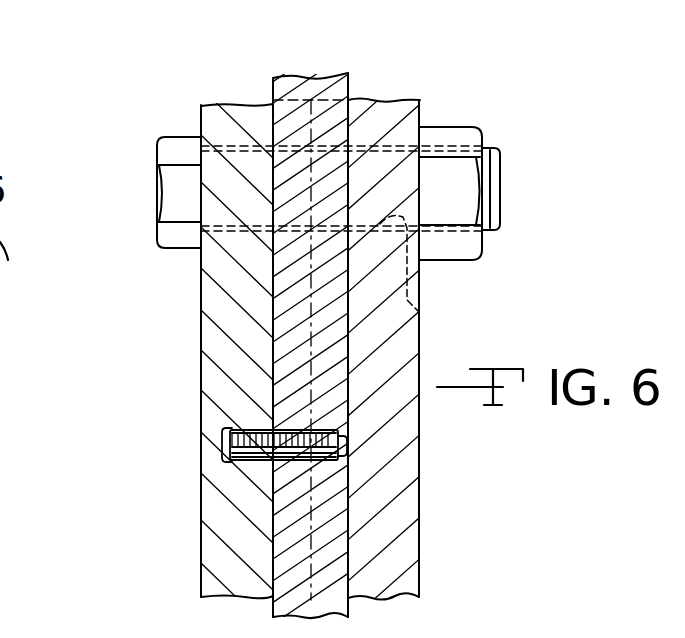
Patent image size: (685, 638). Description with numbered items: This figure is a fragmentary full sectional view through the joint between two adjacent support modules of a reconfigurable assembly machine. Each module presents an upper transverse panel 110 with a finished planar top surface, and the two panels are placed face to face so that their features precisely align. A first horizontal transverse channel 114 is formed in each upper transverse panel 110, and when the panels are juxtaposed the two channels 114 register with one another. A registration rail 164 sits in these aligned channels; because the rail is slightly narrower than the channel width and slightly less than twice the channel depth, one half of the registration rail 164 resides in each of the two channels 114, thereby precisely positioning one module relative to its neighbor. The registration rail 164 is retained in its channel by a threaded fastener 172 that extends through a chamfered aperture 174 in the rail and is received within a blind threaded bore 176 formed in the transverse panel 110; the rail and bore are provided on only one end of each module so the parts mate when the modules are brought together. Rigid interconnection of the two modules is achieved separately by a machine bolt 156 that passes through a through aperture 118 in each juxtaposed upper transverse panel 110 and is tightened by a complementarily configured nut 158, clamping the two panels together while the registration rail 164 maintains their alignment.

The upper transverse panel 110 is at (212, 537).
The first horizontal transverse channel 114 is at (270, 372).
The through aperture 118 is at (425, 312).
The machine bolt 156 is at (181, 196).
The nut 158 is at (468, 240).
The registration rail 164 is at (349, 72).
The threaded fastener 172 is at (345, 442).
The chamfered aperture 174 is at (345, 462).
The blind threaded bore 176 is at (227, 438).